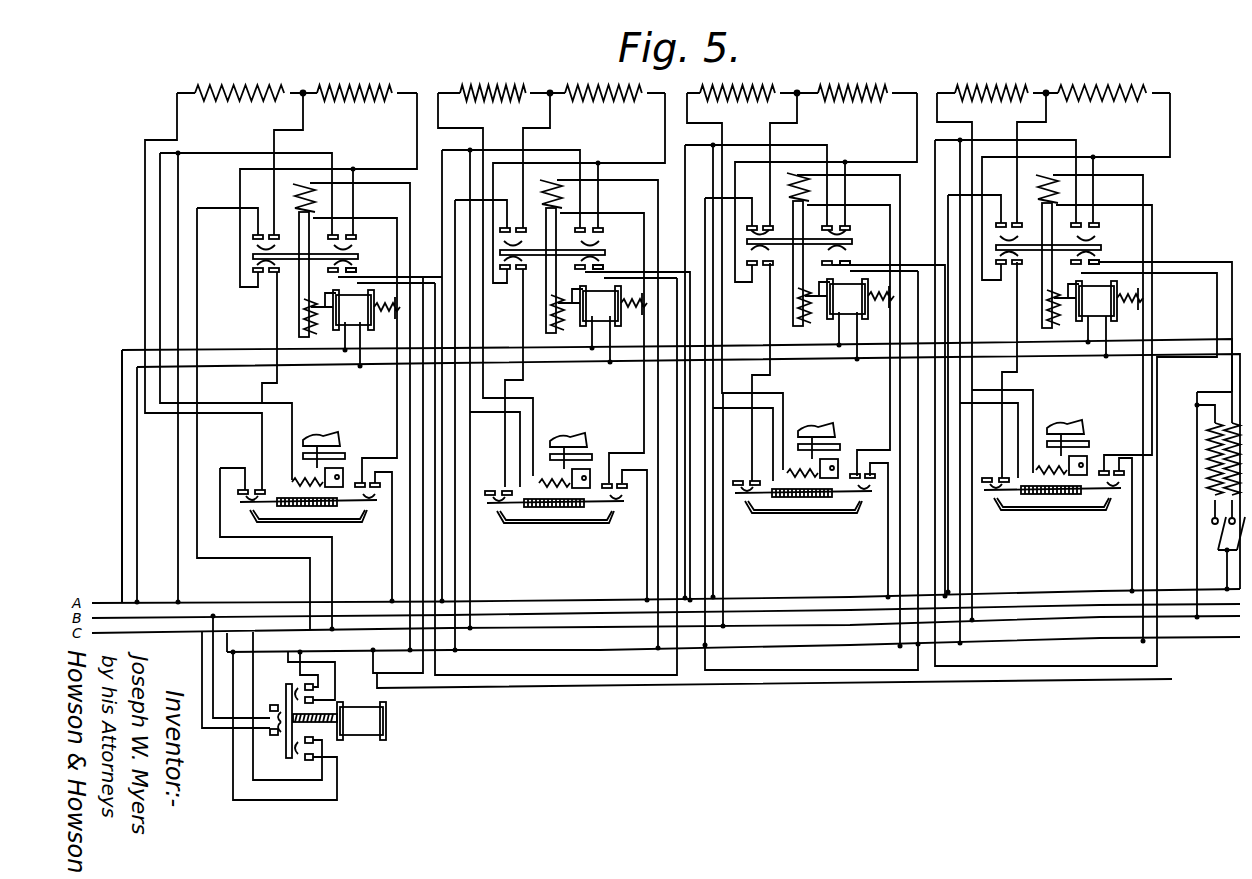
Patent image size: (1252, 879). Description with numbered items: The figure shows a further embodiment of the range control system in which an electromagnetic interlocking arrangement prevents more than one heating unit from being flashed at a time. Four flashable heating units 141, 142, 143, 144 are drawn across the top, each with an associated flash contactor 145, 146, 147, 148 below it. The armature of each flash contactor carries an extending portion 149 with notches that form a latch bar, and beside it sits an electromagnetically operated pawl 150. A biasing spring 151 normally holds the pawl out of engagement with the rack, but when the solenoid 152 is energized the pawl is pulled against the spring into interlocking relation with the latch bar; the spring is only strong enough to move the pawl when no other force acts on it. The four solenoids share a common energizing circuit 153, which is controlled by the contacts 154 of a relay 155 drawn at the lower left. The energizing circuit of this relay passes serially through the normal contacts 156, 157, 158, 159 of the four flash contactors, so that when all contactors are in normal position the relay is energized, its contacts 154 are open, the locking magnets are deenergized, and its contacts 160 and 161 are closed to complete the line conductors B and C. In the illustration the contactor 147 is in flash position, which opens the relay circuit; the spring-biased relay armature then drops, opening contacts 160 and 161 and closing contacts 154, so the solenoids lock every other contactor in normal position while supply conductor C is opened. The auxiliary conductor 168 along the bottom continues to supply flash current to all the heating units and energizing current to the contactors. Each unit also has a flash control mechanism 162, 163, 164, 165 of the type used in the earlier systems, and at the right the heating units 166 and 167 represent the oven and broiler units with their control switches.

The flashable heating unit 141 is at (297, 84).
The flashable heating unit 142 is at (551, 82).
The flashable heating unit 143 is at (802, 81).
The flashable heating unit 144 is at (1053, 80).
The flash contactor 145 is at (392, 248).
The flash contactor 146 is at (644, 241).
The flash contactor 147 is at (889, 238).
The flash contactor 148 is at (1139, 235).
The extending portion 149 is at (302, 293).
The pawl 150 is at (325, 318).
The biasing spring 151 is at (322, 323).
The solenoid 152 is at (352, 321).
The common energizing circuit 153 is at (134, 460).
The relay contacts 154 is at (273, 705).
The relay 155 is at (362, 718).
The normal contacts 156 is at (372, 256).
The normal contacts 157 is at (615, 257).
The normal contacts 158 is at (840, 259).
The normal contacts 159 is at (1105, 257).
The relay contacts 160 is at (316, 757).
The relay contacts 161 is at (316, 700).
The flash control mechanism 162 is at (346, 430).
The flash control mechanism 163 is at (595, 423).
The flash control mechanism 164 is at (843, 420).
The flash control mechanism 165 is at (1091, 416).
The heating unit 166 is at (1213, 442).
The heating unit 167 is at (1233, 420).
The auxiliary conductor 168 is at (553, 652).